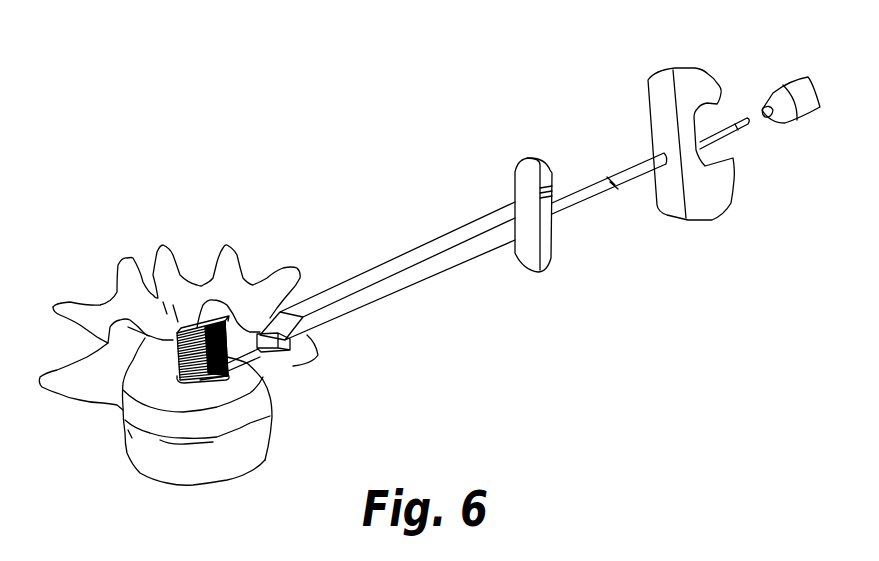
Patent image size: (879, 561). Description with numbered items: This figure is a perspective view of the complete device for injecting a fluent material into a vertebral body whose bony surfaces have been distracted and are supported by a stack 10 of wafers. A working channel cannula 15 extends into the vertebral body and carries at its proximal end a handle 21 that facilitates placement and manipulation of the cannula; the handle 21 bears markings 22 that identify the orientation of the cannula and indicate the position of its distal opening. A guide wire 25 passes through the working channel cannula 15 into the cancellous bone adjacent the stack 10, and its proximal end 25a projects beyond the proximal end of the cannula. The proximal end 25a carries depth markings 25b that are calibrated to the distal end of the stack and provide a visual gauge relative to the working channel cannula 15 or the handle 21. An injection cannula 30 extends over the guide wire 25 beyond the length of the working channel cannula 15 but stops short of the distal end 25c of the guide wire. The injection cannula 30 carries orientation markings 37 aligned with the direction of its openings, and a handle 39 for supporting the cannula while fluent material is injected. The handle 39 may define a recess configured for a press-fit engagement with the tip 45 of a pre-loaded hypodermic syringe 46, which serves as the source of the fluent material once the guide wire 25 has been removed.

The stack 10 is at (173, 358).
The working channel cannula 15 is at (358, 283).
The handle 21 is at (547, 237).
The markings 22 is at (547, 187).
The guide wire 25 is at (263, 358).
The proximal end of the guide wire 25a is at (706, 143).
The depth markings 25b is at (733, 120).
The distal end of the guide wire 25c is at (222, 374).
The injection cannula 30 is at (600, 180).
The orientation markings 37 is at (613, 188).
The handle 39 is at (703, 200).
The tip 45 is at (769, 120).
The hypodermic syringe 46 is at (797, 82).